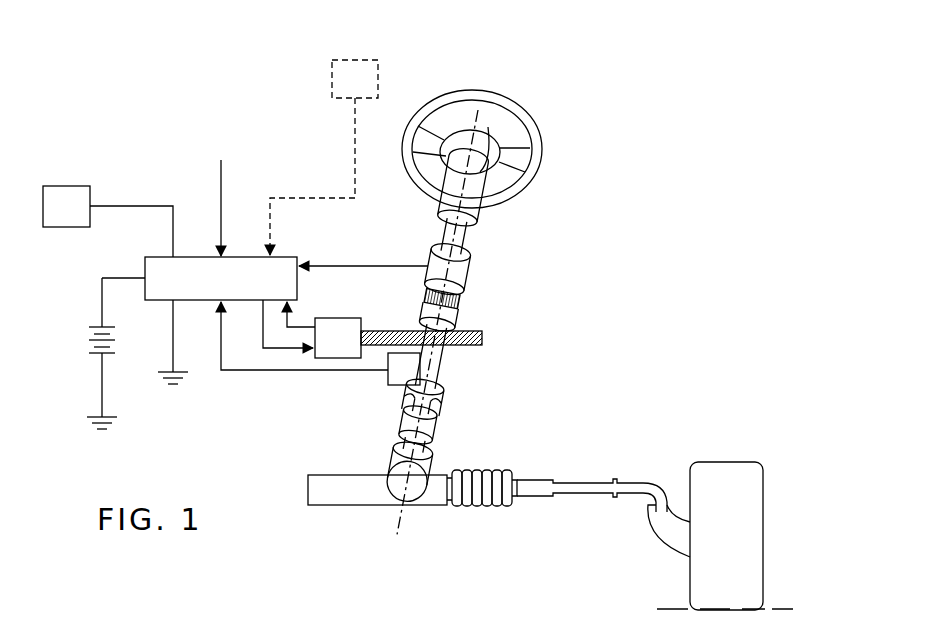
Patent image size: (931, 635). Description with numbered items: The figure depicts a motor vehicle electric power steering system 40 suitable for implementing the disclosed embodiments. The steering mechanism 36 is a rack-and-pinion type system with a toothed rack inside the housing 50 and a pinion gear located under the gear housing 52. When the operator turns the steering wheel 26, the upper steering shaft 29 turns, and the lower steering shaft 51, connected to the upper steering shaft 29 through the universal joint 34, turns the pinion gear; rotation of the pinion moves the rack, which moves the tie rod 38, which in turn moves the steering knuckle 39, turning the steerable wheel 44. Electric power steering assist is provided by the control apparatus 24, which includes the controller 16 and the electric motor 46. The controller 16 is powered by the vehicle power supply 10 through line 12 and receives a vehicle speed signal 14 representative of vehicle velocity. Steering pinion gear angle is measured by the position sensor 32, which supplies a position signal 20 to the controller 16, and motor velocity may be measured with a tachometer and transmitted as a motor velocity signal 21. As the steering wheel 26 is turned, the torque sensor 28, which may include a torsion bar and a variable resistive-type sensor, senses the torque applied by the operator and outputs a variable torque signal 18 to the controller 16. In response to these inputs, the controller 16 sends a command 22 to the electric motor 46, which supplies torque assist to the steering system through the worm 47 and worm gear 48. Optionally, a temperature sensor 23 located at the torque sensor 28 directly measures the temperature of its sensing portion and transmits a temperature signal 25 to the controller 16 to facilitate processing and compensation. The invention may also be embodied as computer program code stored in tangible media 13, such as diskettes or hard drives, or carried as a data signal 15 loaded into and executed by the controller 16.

The vehicle power supply 10 is at (88, 340).
The line 12 is at (120, 278).
The tangible media 13 is at (68, 186).
The vehicle speed signal 14 is at (221, 208).
The data signal 15 is at (103, 206).
The controller 16 is at (200, 257).
The variable torque signal 18 is at (370, 265).
The position signal 20 is at (297, 371).
The motor velocity signal 21 is at (298, 327).
The command 22 is at (268, 350).
The temperature sensor 23 is at (378, 80).
The control apparatus 24 is at (612, 250).
The temperature signal 25 is at (353, 145).
The steering wheel 26 is at (518, 110).
The torque sensor 28 is at (470, 270).
The upper steering shaft 29 is at (480, 222).
The position sensor 32 is at (388, 375).
The universal joint 34 is at (440, 400).
The steering mechanism 36 is at (500, 465).
The tie rod 38 is at (580, 490).
The steering knuckle 39 is at (665, 530).
The electric power steering system 40 is at (692, 333).
The steerable wheel 44 is at (742, 468).
The electric motor 46 is at (345, 318).
The worm 47 is at (483, 340).
The worm gear 48 is at (453, 300).
The housing 50 is at (318, 490).
The lower steering shaft 51 is at (435, 437).
The gear housing 52 is at (395, 458).